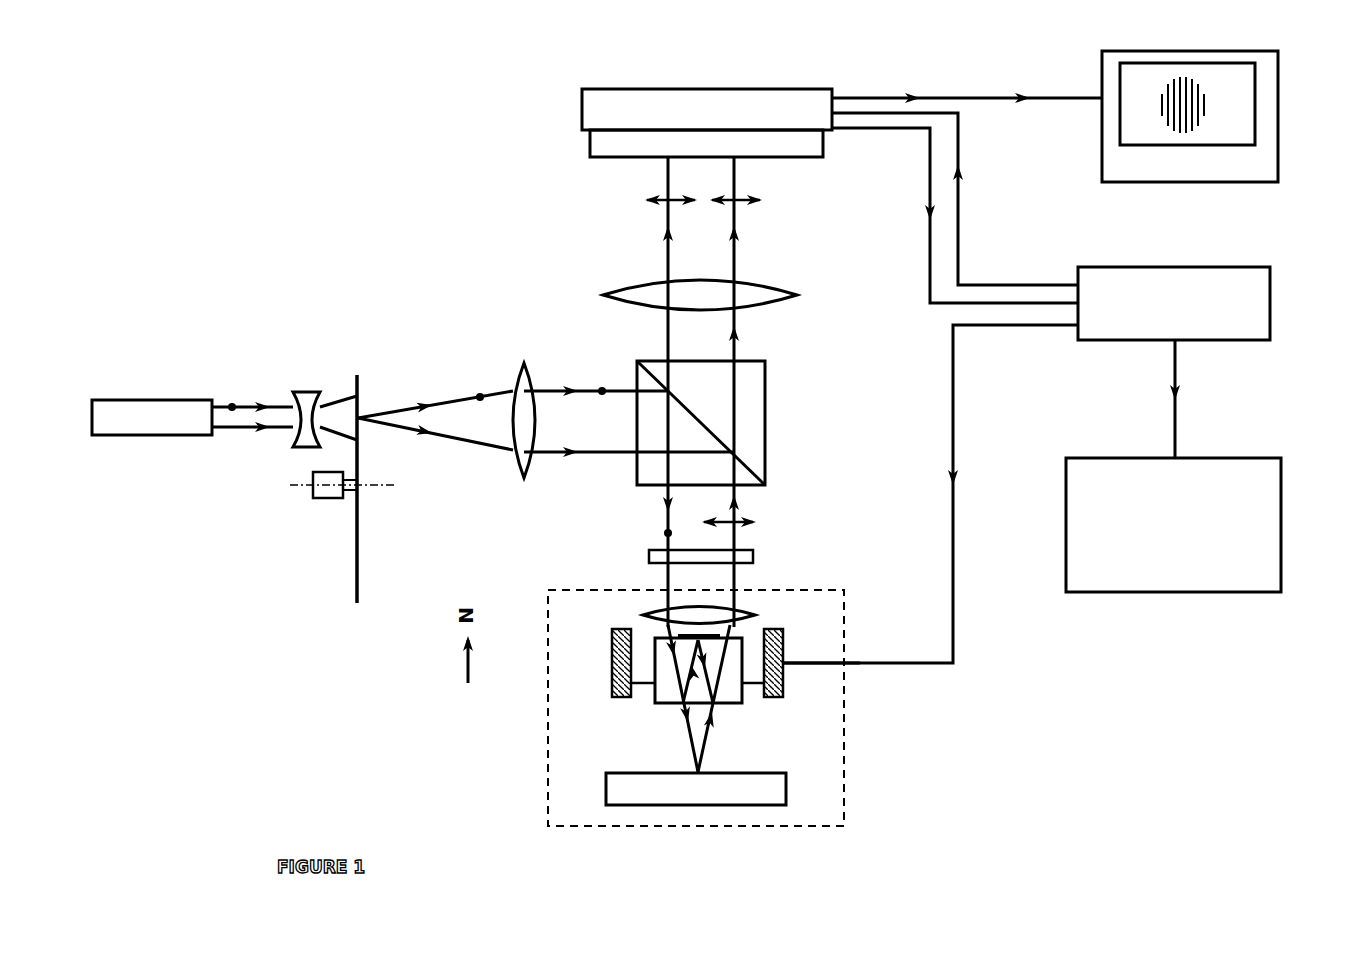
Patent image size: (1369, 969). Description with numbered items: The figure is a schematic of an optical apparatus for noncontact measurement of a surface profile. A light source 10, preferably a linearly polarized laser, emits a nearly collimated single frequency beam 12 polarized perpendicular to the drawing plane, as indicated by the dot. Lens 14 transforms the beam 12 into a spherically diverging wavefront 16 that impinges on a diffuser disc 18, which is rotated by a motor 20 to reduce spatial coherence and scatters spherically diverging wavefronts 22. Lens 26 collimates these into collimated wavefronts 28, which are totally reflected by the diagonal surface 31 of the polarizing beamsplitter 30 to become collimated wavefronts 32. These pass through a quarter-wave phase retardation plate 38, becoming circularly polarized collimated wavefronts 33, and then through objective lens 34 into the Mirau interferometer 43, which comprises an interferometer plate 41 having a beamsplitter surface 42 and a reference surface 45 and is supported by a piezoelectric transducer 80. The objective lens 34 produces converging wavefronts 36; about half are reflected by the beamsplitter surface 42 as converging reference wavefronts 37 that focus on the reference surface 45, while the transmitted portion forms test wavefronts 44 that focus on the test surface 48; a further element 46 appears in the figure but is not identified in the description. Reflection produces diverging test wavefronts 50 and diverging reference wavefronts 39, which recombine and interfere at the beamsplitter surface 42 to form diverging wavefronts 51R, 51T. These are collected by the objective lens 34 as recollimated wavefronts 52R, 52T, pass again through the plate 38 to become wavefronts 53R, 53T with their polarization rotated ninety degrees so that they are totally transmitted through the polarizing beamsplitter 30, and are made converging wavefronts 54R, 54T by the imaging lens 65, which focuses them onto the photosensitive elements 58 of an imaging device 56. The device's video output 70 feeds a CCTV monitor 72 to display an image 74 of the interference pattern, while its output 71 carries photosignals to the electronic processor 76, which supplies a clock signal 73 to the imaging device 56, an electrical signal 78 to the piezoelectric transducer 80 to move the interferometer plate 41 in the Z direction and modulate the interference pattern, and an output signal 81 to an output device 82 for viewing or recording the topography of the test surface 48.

The light source 10 is at (98, 398).
The single frequency beam 12 is at (232, 430).
The lens 14 is at (297, 393).
The spherically diverging wavefront 16 is at (333, 398).
The diffuser disc 18 is at (358, 502).
The motor 20 is at (325, 502).
The spherically diverging wavefronts 22 is at (415, 437).
The lens 26 is at (527, 363).
The collimated wavefronts 28 is at (552, 457).
The polarizing beamsplitter 30 is at (767, 380).
The polarizing beamsplitter diagonal surface 31 is at (703, 420).
The collimated wavefronts 32 is at (667, 520).
The circularly polarized collimated wavefronts 33 is at (666, 578).
The objective lens 34 is at (735, 607).
The converging wavefronts 36 is at (657, 640).
The converging reference wavefronts 37 is at (655, 692).
The quarter-wave phase retardation plate 38 is at (740, 548).
The diverging reference wavefronts 39 is at (700, 680).
The interferometer plate 41 is at (673, 643).
The beamsplitter surface 42 is at (672, 705).
The Mirau interferometer 43 is at (845, 742).
The test wavefronts 44 is at (697, 737).
The reference surface 45 is at (727, 672).
The mirror 46 is at (730, 790).
The test surface 48 is at (618, 770).
The diverging test wavefronts 50 is at (705, 733).
The reflected and transmitted beams 51R, 51T is at (738, 638).
The reflected and transmitted beams 52R, 52T is at (735, 577).
The reflected and transmitted beams 53R, 53T is at (740, 537).
The reflected and transmitted beams 54R, 54T is at (737, 260).
The imaging device 56 is at (582, 100).
The photosensitive elements 58 is at (595, 157).
The imaging lens 65 is at (760, 290).
The video output 70 is at (877, 96).
The output 71 is at (928, 165).
The CCTV monitor 72 is at (1102, 52).
The clock signal 73 is at (960, 193).
The image 74 is at (1207, 105).
The electronic processor 76 is at (1272, 298).
The electronic output 78 is at (953, 378).
The piezoelectric transducer 80 is at (783, 654).
The output signal 81 is at (1178, 425).
The output device 82 is at (1283, 497).